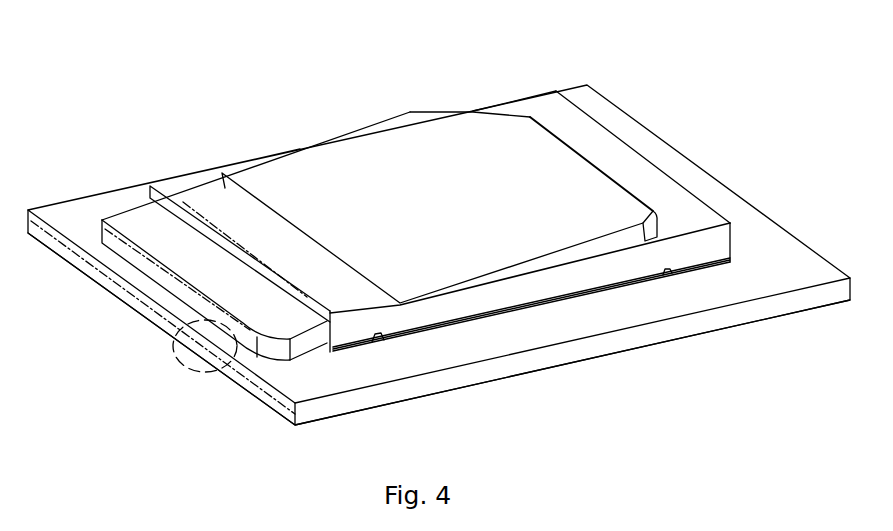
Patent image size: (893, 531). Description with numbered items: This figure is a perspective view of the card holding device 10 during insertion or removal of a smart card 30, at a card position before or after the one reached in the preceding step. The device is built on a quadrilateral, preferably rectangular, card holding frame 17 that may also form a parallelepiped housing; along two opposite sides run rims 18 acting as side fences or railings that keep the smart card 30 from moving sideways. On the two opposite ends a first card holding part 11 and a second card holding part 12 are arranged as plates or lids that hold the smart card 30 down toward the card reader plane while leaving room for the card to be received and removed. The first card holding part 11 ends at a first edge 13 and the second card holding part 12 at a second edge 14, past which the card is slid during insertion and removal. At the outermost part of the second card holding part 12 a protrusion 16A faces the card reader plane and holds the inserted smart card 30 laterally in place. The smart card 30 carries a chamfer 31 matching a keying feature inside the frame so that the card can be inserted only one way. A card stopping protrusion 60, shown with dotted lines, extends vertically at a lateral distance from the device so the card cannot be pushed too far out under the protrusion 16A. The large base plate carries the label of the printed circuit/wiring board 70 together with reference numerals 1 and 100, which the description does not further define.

The sample holder device 1 is at (439, 357).
The printed circuit/wiring board 70 is at (439, 357).
The measuring device 100 is at (350, 402).
The card holding device 10 is at (682, 300).
The first card holding part 11 is at (548, 122).
The second card holding part 12 is at (207, 195).
The first edge of the first card holding part 13 is at (664, 237).
The second edge of the second card holding part 14 is at (287, 217).
The first protrusion at the second card holding part 16A is at (223, 252).
The card holding frame 17 is at (548, 298).
The rims of the card holding frame 18 is at (486, 297).
The smart card 30 is at (425, 131).
The smart card chamfer 31 is at (472, 114).
The card stopping protrusion 60 is at (180, 345).